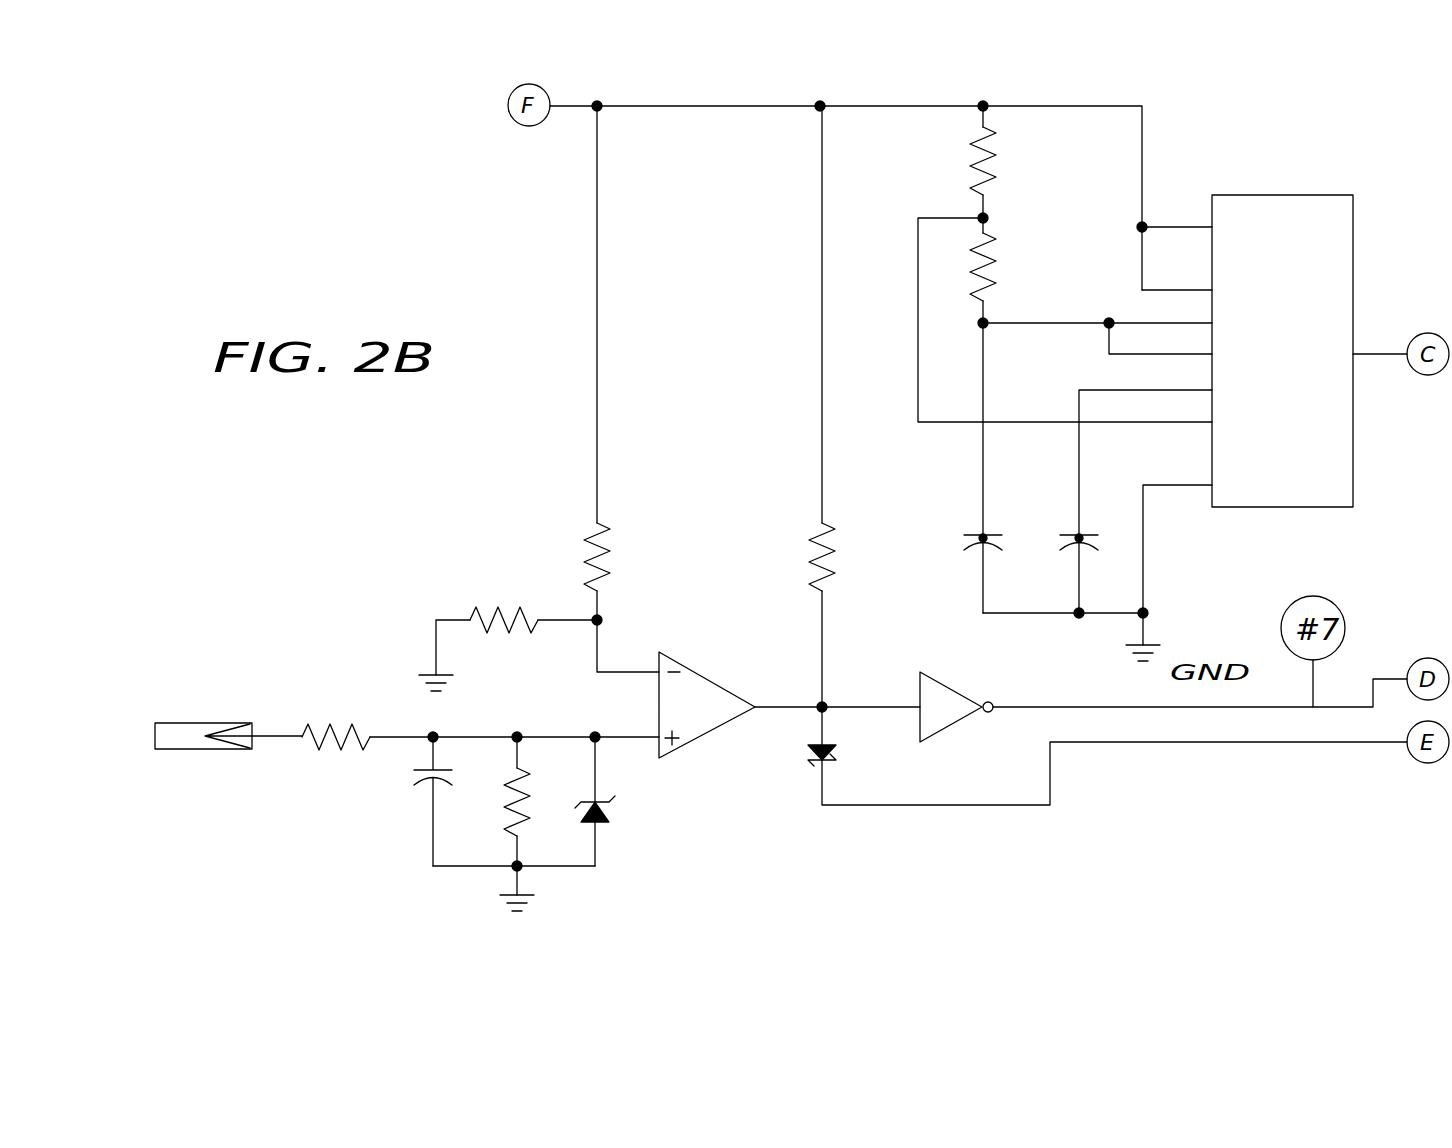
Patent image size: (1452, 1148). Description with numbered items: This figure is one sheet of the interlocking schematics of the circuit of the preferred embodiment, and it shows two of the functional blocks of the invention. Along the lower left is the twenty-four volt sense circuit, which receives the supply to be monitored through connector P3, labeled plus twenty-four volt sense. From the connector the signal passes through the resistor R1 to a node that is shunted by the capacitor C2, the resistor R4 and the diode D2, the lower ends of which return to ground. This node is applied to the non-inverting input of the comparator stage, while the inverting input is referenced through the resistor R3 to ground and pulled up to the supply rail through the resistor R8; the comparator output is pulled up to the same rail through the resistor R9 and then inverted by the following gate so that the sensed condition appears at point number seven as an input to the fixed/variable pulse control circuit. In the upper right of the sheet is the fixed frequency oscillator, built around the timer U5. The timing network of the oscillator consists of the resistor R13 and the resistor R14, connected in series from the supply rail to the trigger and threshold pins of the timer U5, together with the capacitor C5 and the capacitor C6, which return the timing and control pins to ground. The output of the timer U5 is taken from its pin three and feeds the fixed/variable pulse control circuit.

The connector P3 (+24V SENSE) P3 is at (262, 726).
The resistor R1 is at (480, 721).
The capacitor C2 is at (418, 801).
The resistor R4 is at (550, 833).
The diode D2 is at (583, 801).
The resistor R3 is at (508, 647).
The resistor R8 is at (607, 389).
The resistor R9 is at (807, 425).
The resistor R13 is at (970, 164).
The resistor R14 is at (969, 273).
The capacitor C5 is at (999, 468).
The capacitor C6 is at (1136, 501).
The timer U5 is at (1272, 337).